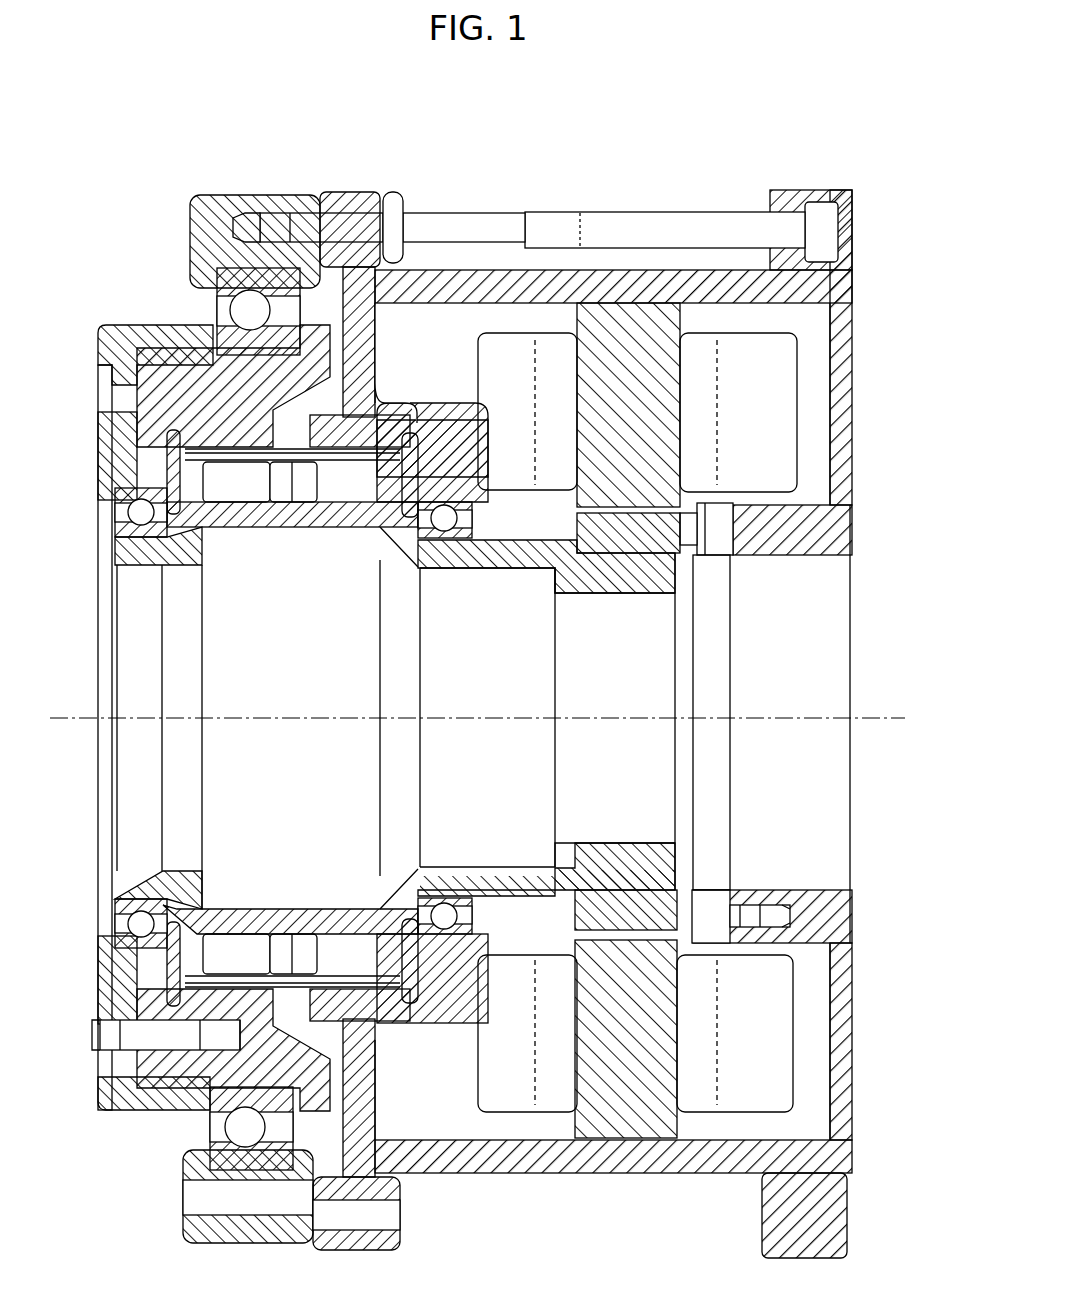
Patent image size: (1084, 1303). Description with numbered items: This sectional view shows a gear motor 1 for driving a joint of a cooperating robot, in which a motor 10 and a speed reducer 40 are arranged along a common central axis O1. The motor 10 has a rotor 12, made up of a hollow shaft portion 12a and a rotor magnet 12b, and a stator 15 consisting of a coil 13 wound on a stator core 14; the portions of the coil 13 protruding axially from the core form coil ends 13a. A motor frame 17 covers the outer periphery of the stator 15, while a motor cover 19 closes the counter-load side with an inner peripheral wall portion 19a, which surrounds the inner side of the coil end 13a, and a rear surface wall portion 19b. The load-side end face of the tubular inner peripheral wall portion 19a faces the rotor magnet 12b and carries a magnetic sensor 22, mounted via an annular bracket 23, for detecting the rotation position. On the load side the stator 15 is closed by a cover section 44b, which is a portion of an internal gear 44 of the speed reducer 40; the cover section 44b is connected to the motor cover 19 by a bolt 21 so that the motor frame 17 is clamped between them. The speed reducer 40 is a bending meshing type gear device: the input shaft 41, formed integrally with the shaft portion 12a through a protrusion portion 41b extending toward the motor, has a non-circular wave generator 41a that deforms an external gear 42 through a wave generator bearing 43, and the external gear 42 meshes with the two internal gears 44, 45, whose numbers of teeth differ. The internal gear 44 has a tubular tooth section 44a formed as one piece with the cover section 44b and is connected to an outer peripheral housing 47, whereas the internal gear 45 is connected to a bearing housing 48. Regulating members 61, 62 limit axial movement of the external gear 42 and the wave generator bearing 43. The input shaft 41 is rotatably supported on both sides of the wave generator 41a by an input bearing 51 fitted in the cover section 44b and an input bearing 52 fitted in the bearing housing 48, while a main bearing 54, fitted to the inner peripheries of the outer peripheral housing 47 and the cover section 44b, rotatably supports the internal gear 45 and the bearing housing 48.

The motor 1 is at (724, 126).
The motor 10 is at (852, 152).
The rotor 12 is at (918, 612).
The shaft portion 12a is at (652, 582).
The rotor magnet 12b is at (652, 542).
The coil 13 is at (700, 432).
The coil end 13a is at (792, 340).
The stator core 14 is at (655, 410).
The stator 15 is at (918, 322).
The motor frame 17 is at (640, 292).
The motor cover 19 is at (918, 435).
The inner peripheral wall portion 19a is at (800, 523).
The rear surface wall portion 19b is at (840, 432).
The bolt 21 is at (578, 228).
The magnetic sensor 22 is at (720, 527).
The annular bracket 23 is at (722, 806).
The speed reducer 40 is at (431, 152).
The input shaft 41 is at (130, 806).
The wave generator 41a is at (290, 899).
The protrusion portion 41b is at (663, 838).
The external gear 42 is at (163, 456).
The wave generator bearing 43 is at (246, 500).
The internal gear 44 is at (332, 200).
The tooth section 44a is at (330, 468).
The cover section 44b is at (380, 372).
The internal gear 45 is at (196, 368).
The outer peripheral housing 47 is at (192, 222).
The bearing housing 48 is at (100, 335).
The input bearing 51 is at (444, 532).
The input bearing 52 is at (138, 512).
The main bearing 54 is at (240, 300).
The regulating member 61 is at (402, 528).
The regulating member 62 is at (197, 534).
The central axis O1 is at (502, 721).